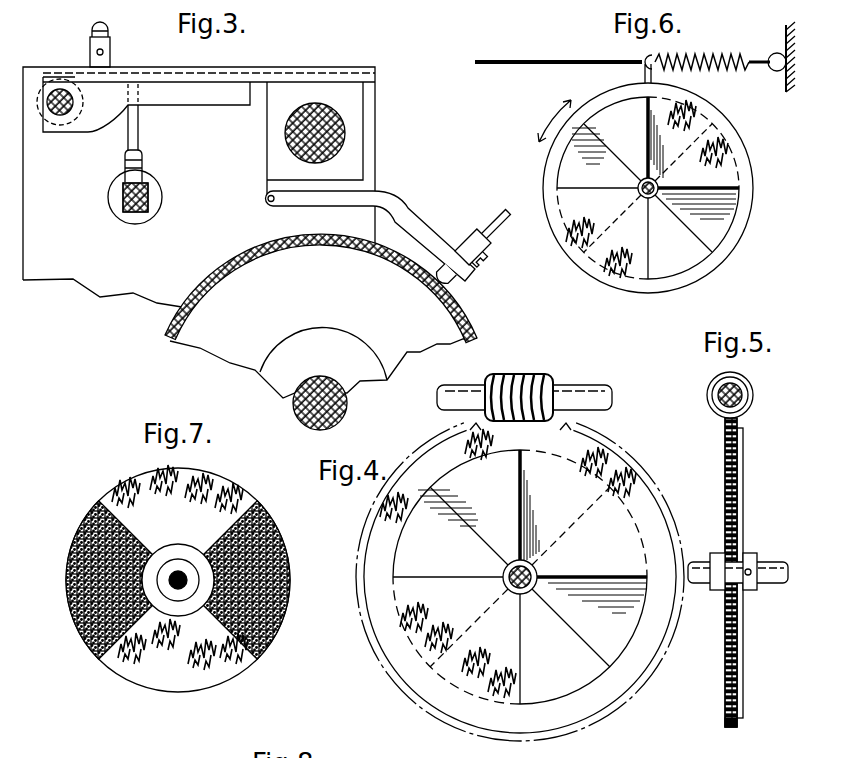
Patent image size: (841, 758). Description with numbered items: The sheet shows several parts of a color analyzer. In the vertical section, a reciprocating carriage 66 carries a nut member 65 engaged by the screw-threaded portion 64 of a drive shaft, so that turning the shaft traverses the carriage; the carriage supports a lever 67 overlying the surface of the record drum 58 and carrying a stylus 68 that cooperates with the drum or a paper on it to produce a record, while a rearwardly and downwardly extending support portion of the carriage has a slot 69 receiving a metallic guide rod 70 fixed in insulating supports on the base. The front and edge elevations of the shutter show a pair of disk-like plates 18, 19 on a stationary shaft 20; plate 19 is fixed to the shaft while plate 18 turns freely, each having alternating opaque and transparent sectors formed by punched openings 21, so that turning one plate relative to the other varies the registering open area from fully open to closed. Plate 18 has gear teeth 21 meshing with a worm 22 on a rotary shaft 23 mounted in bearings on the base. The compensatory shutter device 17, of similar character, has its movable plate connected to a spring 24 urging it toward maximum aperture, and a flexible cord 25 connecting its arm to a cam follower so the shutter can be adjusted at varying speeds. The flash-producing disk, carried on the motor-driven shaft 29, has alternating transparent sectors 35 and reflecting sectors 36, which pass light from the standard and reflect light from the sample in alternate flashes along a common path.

In FIG. 6, the shutter device 17 is at (741, 124).
In FIG. 4, the disk-like plate 18 is at (433, 456).
In FIG. 5, the disk-like plate 19 is at (745, 472).
In FIG. 4, the stationary shaft 20 is at (527, 594).
In FIG. 5, the stationary shaft 20 is at (766, 562).
In FIG. 4, the openings / gear teeth 21 is at (570, 692).
In FIG. 5, the openings / gear teeth 21 is at (725, 490).
In FIG. 4, the worm 22 is at (523, 373).
In FIG. 5, the worm 22 is at (750, 382).
In FIG. 4, the rotary shaft 23 is at (580, 385).
In FIG. 5, the rotary shaft 23 is at (742, 395).
In FIG. 6, the spring 24 is at (722, 53).
In FIG. 6, the flexible cord 25 is at (505, 60).
In FIG. 7, the shaft 29 is at (183, 579).
In FIG. 7, the transparent sectors 35 is at (228, 492).
In FIG. 7, the reflecting sectors 36 is at (268, 624).
In FIG. 3, the drum 58 is at (474, 330).
In FIG. 3, the screw-threaded portion 64 is at (330, 120).
In FIG. 3, the nut member 65 is at (355, 148).
In FIG. 3, the reciprocating carriage 66 is at (250, 78).
In FIG. 3, the lever 67 is at (410, 198).
In FIG. 3, the stylus 68 is at (463, 274).
In FIG. 3, the slot 69 is at (90, 113).
In FIG. 3, the guide rod 70 is at (59, 92).